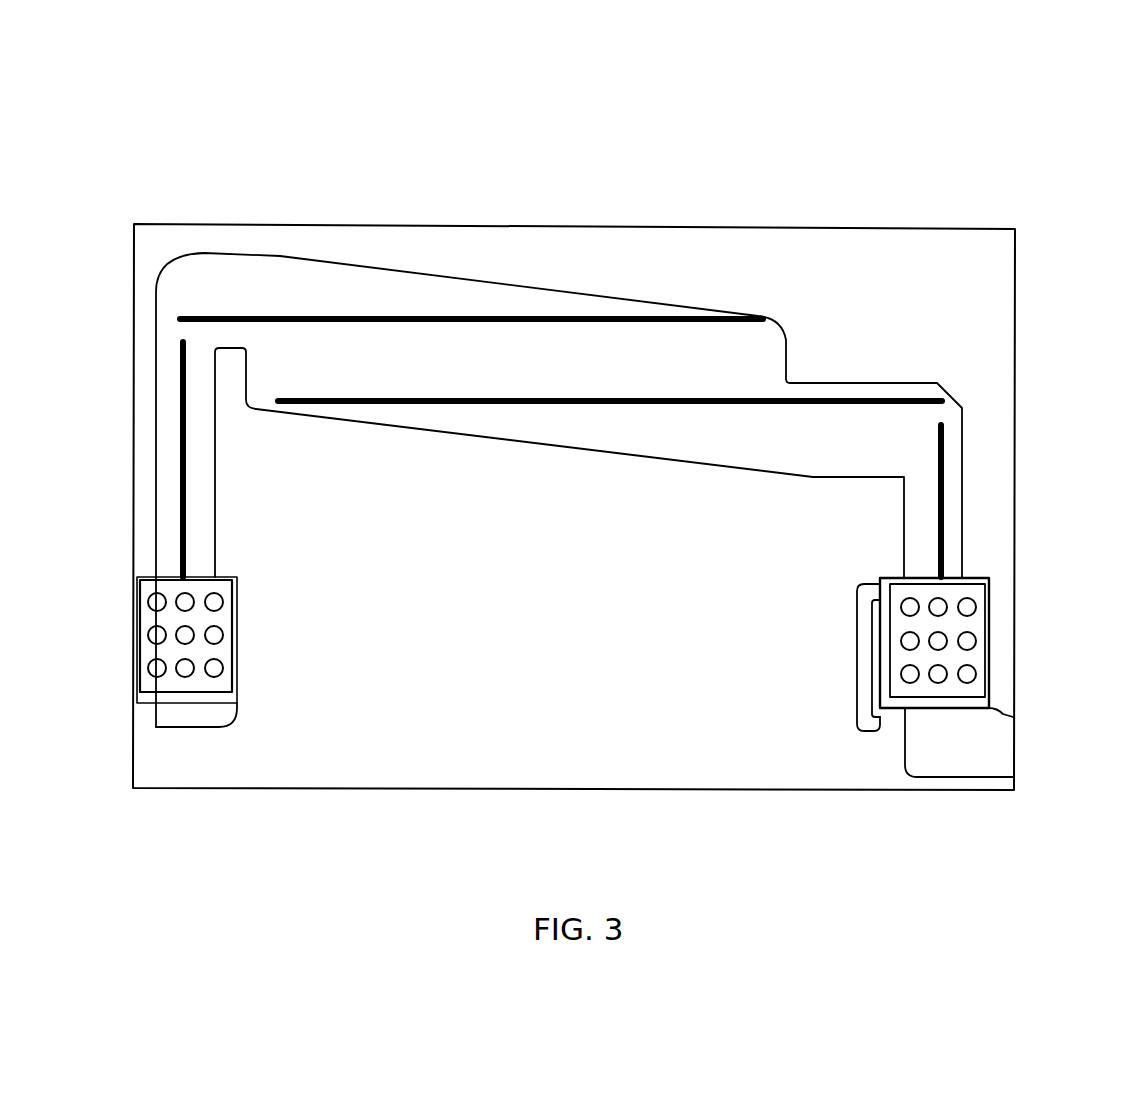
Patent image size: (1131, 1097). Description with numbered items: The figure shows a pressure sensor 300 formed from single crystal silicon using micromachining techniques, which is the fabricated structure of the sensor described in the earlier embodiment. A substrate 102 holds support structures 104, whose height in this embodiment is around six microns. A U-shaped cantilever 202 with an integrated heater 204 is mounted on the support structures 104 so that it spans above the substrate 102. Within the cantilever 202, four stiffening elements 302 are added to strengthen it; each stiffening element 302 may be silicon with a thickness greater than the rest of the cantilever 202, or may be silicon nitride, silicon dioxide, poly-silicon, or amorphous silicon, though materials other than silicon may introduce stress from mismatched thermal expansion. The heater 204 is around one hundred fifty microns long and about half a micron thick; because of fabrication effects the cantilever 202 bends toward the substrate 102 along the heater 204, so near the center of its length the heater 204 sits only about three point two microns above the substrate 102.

The pressure sensor 300 is at (1003, 171).
The substrate 102 is at (1007, 427).
The support structures 104 is at (162, 620).
The cantilever 202 is at (279, 285).
The heater 204 is at (532, 357).
The stiffening element 302 is at (267, 317).